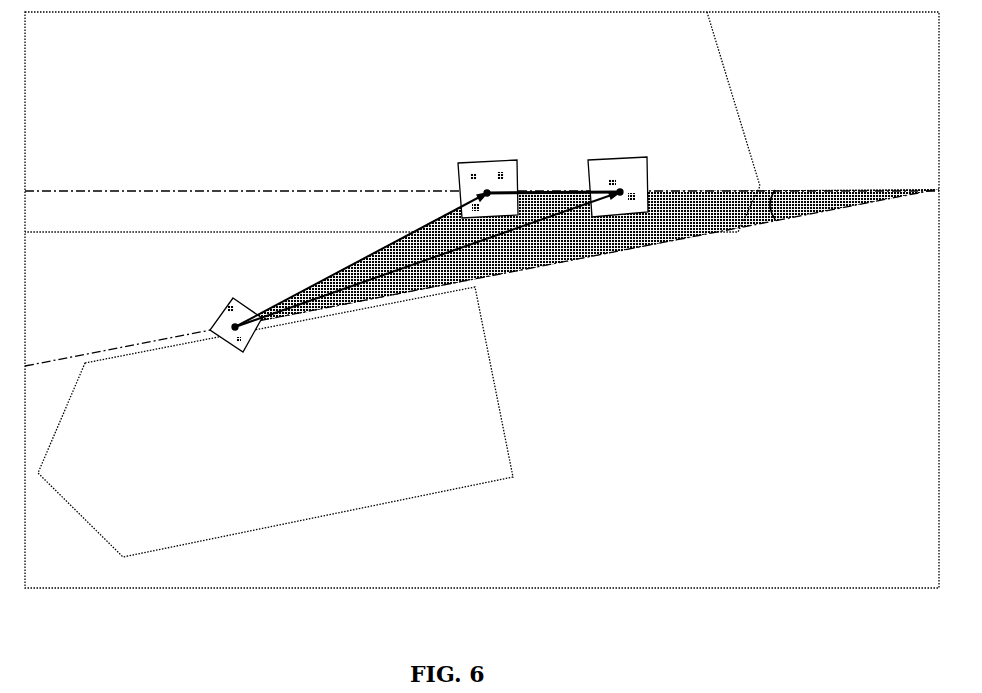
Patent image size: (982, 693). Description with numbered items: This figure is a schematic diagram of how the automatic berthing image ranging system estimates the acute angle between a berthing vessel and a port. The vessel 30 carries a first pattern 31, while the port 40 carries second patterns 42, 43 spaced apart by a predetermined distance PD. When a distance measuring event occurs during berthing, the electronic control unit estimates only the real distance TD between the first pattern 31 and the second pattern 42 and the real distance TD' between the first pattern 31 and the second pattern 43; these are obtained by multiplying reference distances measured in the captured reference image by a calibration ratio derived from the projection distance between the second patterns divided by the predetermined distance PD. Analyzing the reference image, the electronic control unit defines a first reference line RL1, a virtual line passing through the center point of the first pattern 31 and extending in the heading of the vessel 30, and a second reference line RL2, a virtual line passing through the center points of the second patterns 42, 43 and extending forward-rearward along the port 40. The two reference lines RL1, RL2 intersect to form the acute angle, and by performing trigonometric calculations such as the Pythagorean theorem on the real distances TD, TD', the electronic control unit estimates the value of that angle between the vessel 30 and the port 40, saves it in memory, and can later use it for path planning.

The vessel 30 is at (256, 431).
The first pattern 31 is at (244, 351).
The port 40 is at (366, 111).
The second pattern 42 is at (481, 162).
The second pattern 43 is at (612, 158).
The first reference line RL1 is at (175, 337).
The second reference line RL2 is at (174, 190).
The real distance TD is at (373, 260).
The real distance TD' is at (427, 259).
The predetermined distance PD is at (548, 190).